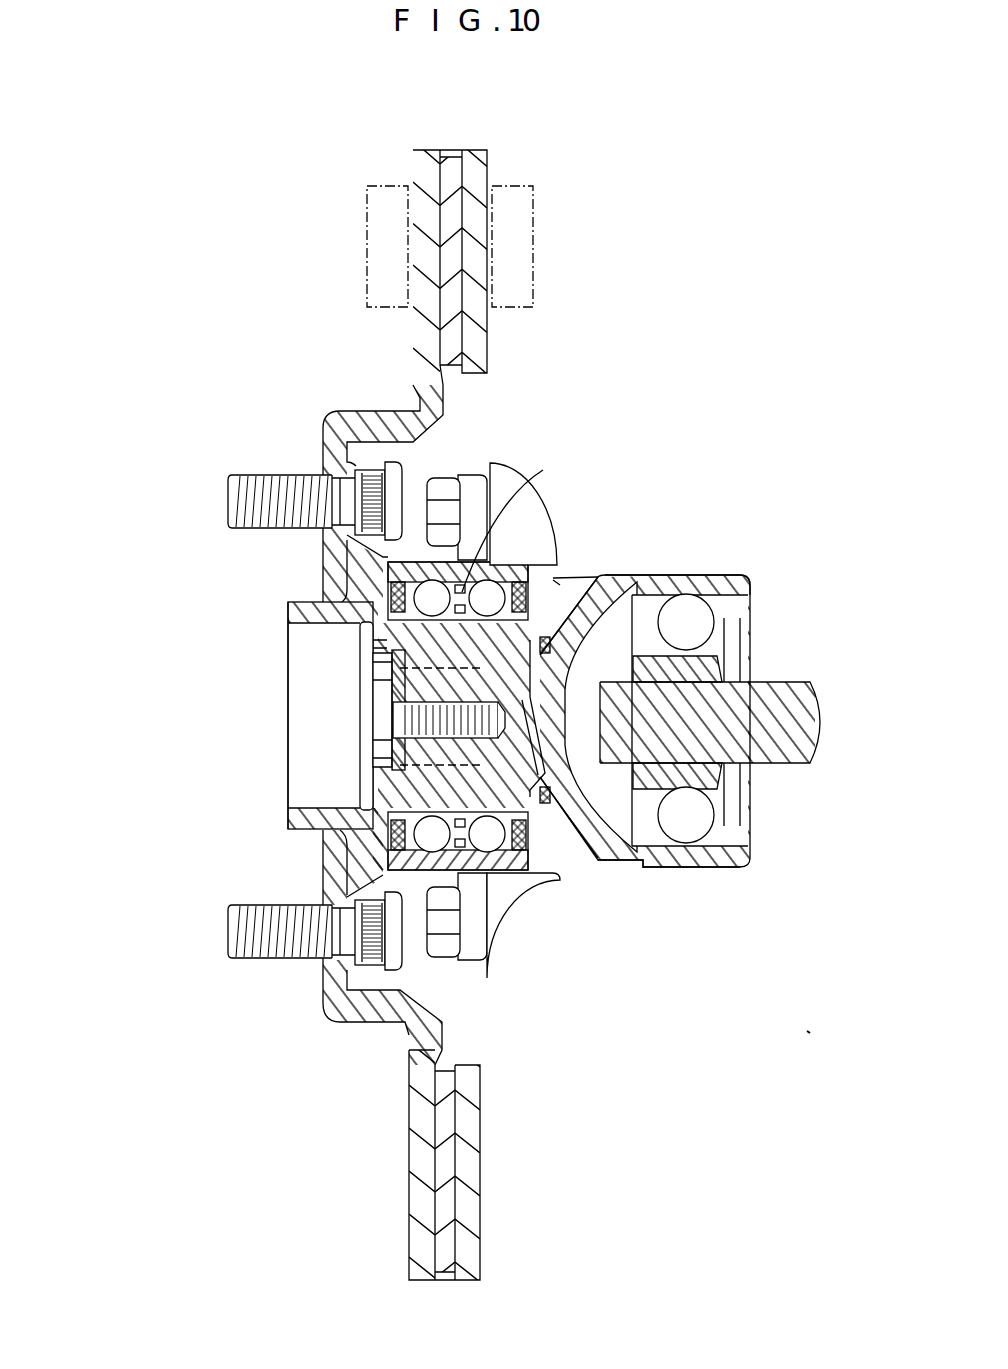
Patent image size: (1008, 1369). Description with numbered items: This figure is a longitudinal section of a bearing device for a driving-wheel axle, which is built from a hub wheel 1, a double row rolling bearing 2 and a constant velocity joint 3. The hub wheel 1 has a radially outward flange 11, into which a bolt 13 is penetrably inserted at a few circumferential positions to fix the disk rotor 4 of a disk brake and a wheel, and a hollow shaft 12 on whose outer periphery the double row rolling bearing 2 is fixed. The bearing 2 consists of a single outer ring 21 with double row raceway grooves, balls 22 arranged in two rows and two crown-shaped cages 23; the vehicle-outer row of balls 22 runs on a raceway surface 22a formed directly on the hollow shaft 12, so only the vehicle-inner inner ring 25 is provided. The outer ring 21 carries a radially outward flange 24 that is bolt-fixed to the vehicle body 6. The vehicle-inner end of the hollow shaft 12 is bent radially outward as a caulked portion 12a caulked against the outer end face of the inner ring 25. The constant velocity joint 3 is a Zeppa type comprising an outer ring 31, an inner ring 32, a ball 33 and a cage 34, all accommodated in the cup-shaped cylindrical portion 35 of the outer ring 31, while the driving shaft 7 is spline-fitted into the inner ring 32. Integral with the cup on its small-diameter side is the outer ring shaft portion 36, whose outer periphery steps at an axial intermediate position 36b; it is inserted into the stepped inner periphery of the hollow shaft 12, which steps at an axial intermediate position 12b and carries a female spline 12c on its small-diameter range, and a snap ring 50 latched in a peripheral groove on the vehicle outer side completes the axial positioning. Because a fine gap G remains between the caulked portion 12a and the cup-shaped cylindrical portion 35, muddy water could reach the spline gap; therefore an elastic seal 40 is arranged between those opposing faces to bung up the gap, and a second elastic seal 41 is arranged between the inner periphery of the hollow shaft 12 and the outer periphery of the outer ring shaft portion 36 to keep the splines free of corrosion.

The hub wheel 1 is at (288, 804).
The double row rolling bearing 2 is at (417, 562).
The constant velocity joint 3 is at (669, 721).
The disk rotor 4 is at (432, 152).
The vehicle body 6 is at (503, 493).
The shaft (driving shaft) 7 is at (806, 756).
The radially outward flange 11 is at (357, 558).
The hollow shaft 12 is at (377, 628).
The caulked portion 12a is at (540, 617).
The axial intermediate position 12b is at (500, 568).
The female spline 12c is at (378, 683).
The bolt 13 is at (265, 478).
The outer ring 21 is at (516, 518).
The balls 22 is at (427, 600).
The raceway surface 22a is at (378, 657).
The crown-shaped cages 23 is at (476, 575).
The radially outward flange 24 is at (470, 492).
The inner ring 25 is at (548, 636).
The outer ring 31 is at (740, 587).
The inner ring 32 is at (717, 667).
The ball 33 is at (698, 617).
The cage 34 is at (743, 622).
The cup-shaped cylindrical portion 35 is at (688, 868).
The shaft portion (outer ring shaft portion) 36 is at (638, 575).
The axial intermediate position 36b is at (556, 582).
The seal 40 is at (590, 862).
The seal 41 is at (540, 790).
The snap ring 50 is at (380, 690).
The fine gap G is at (558, 845).